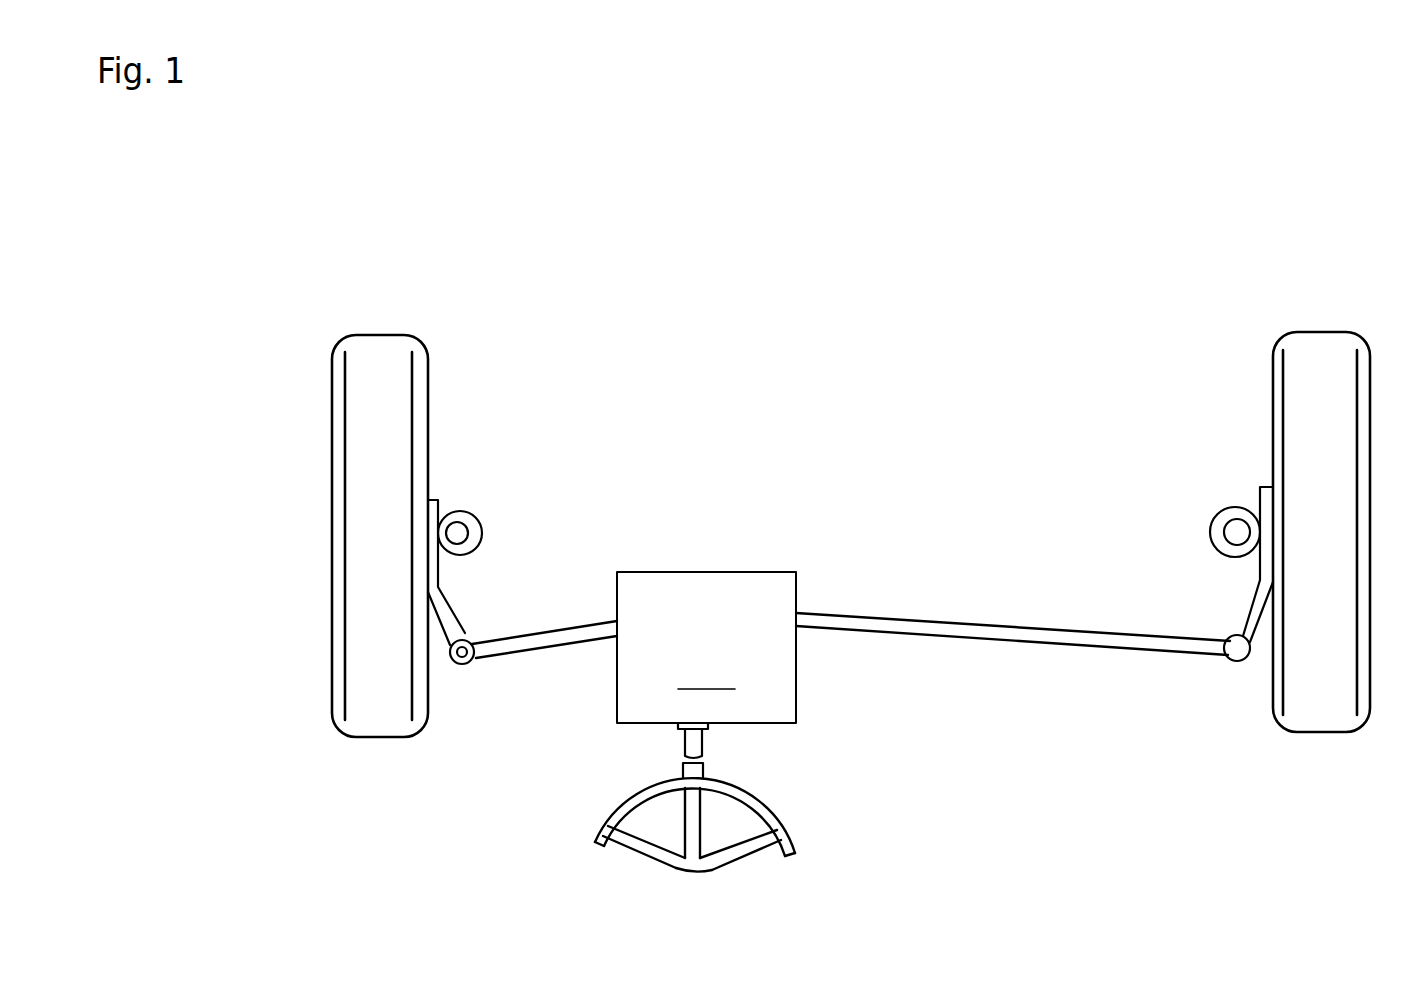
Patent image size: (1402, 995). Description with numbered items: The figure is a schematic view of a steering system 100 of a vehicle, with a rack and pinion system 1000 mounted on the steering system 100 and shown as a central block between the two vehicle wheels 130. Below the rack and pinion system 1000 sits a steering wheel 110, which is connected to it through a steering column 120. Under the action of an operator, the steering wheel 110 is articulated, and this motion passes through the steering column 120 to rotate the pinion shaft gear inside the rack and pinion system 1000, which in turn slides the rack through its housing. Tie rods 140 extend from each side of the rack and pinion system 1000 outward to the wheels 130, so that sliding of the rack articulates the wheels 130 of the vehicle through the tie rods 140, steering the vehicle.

The steering system 100 is at (858, 275).
The steering wheel 110 is at (593, 837).
The steering column 120 is at (702, 742).
The wheels 130 is at (340, 420).
The tie rods 140 is at (887, 620).
The rack and pinion system 1000 is at (706, 647).